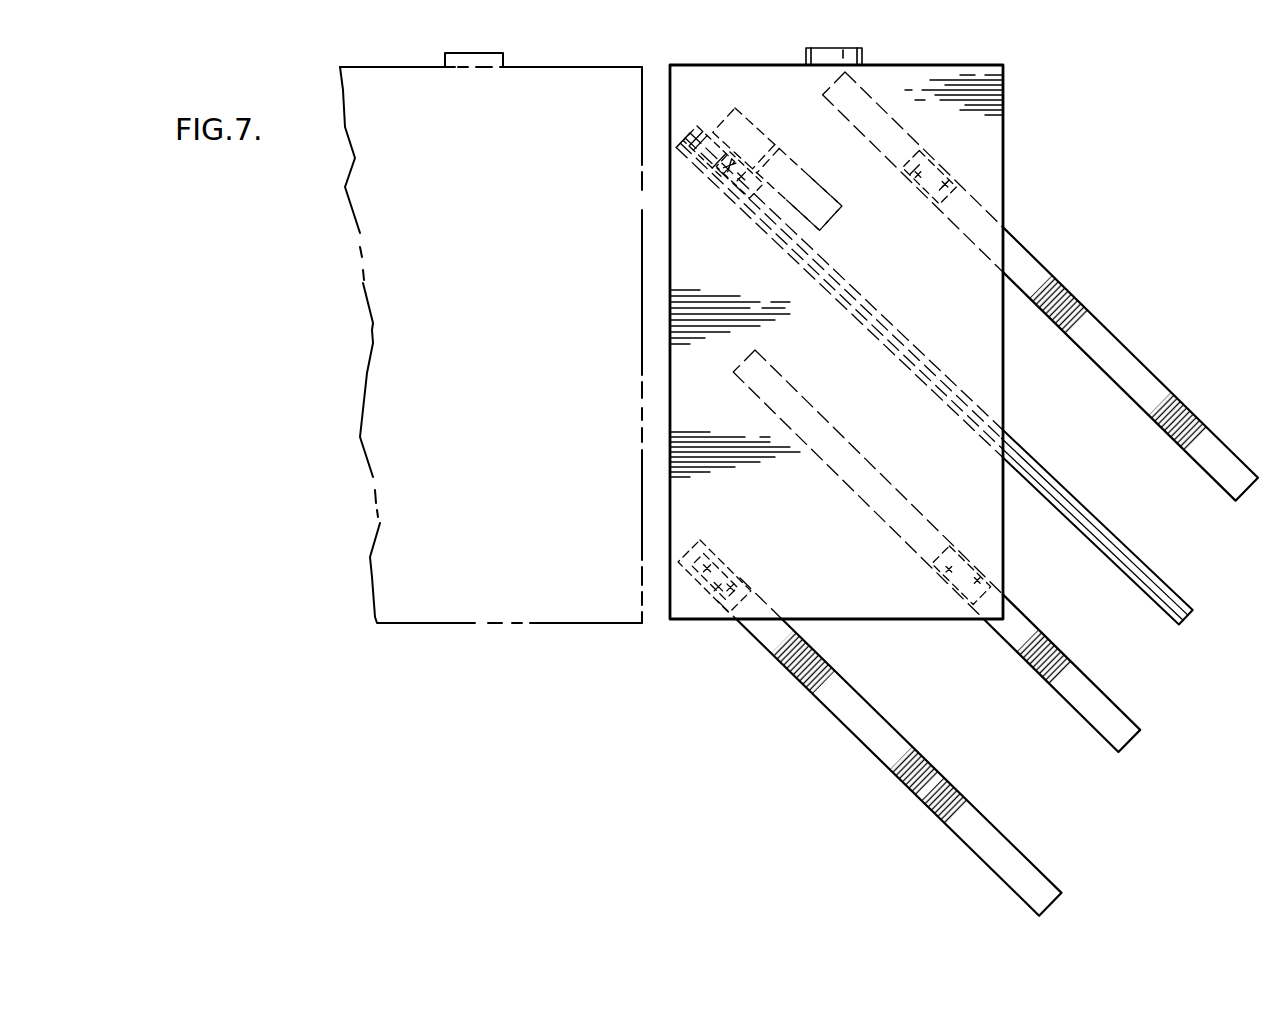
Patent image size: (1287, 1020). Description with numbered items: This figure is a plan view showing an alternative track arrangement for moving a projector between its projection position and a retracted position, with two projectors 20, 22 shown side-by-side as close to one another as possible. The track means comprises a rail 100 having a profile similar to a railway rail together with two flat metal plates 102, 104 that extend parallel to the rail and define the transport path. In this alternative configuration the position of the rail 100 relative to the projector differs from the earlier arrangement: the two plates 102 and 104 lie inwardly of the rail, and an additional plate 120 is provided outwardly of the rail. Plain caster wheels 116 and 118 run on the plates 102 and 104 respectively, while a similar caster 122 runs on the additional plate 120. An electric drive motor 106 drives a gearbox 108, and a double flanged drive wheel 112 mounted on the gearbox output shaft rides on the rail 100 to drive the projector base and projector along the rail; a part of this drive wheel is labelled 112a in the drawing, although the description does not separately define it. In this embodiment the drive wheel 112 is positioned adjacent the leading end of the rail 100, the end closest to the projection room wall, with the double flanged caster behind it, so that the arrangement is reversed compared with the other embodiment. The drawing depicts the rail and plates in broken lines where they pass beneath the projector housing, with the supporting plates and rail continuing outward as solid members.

The projector 20 is at (1028, 98).
The projector 22 is at (611, 50).
The rail 100 is at (1122, 556).
The flat metal plate 102 is at (937, 787).
The flat metal plate 104 is at (1103, 710).
The electric drive motor 106 is at (830, 194).
The gearbox 108 is at (736, 105).
The double flanged drive wheel 112 is at (720, 178).
The connector end 112a is at (702, 168).
The plain caster wheel 116 is at (741, 572).
The plain caster wheel 118 is at (976, 576).
The additional plate 120 is at (1138, 378).
The caster 122 is at (957, 186).